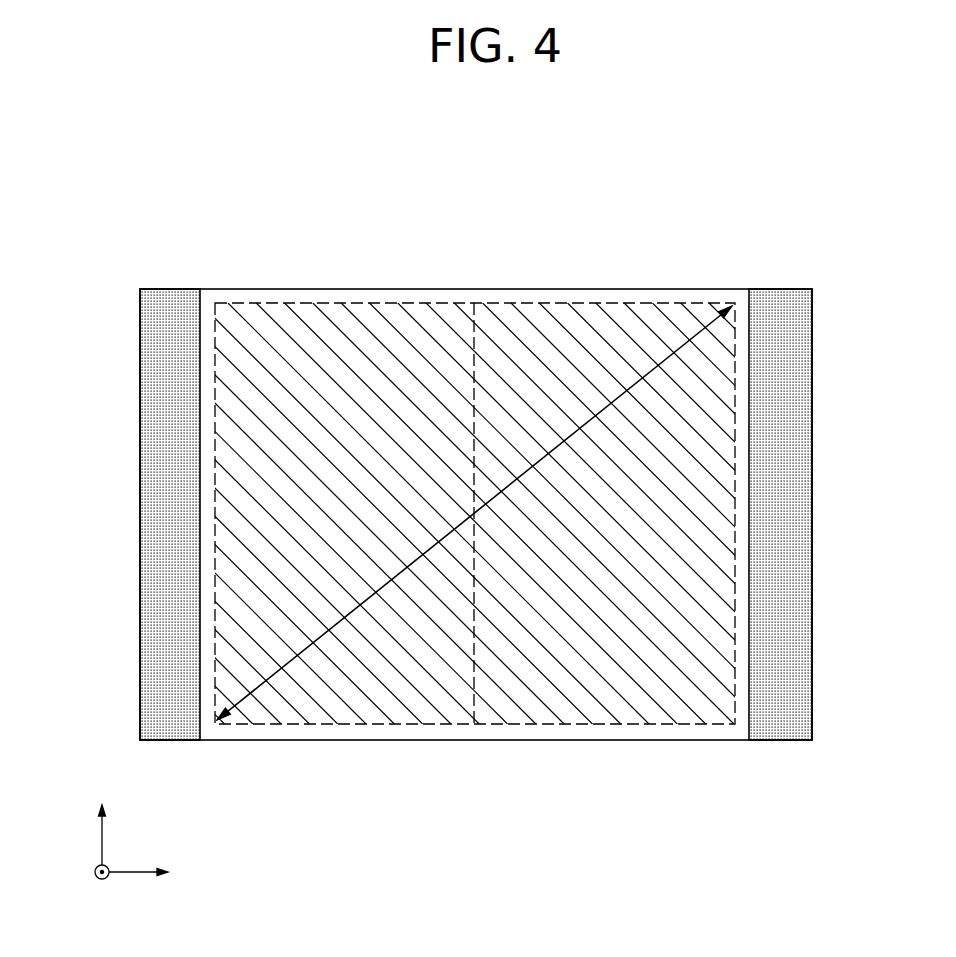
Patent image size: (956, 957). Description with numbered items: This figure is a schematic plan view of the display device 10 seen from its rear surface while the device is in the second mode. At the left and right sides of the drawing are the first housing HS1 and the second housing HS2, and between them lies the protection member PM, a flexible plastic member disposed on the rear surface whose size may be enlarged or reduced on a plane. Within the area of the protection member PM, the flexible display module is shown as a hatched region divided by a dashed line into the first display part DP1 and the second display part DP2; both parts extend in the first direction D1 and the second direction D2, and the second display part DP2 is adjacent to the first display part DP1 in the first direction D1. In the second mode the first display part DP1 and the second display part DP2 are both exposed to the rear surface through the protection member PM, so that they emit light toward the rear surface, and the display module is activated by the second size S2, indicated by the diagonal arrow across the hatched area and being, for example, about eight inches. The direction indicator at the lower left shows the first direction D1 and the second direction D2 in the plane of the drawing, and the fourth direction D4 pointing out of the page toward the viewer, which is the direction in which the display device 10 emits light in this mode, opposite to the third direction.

The display device 10 is at (494, 194).
The first housing HS1 is at (170, 296).
The second housing HS2 is at (782, 297).
The protection member PM is at (314, 303).
The first display part DP1 is at (650, 706).
The second display part DP2 is at (393, 706).
The second size S2 is at (357, 612).
The first direction D1 is at (154, 873).
The second direction D2 is at (102, 821).
The fourth direction D4 is at (83, 873).